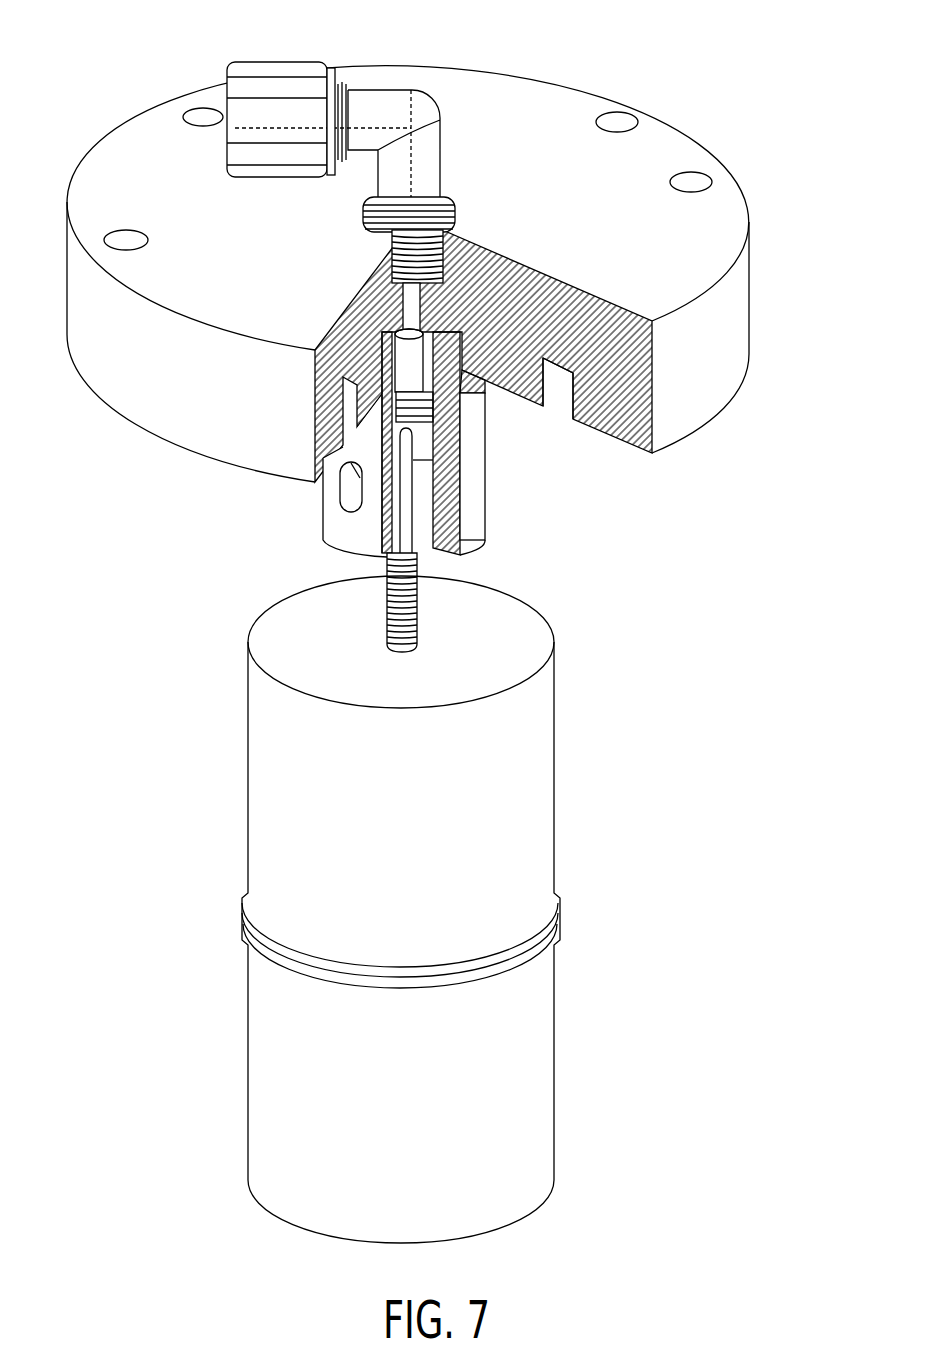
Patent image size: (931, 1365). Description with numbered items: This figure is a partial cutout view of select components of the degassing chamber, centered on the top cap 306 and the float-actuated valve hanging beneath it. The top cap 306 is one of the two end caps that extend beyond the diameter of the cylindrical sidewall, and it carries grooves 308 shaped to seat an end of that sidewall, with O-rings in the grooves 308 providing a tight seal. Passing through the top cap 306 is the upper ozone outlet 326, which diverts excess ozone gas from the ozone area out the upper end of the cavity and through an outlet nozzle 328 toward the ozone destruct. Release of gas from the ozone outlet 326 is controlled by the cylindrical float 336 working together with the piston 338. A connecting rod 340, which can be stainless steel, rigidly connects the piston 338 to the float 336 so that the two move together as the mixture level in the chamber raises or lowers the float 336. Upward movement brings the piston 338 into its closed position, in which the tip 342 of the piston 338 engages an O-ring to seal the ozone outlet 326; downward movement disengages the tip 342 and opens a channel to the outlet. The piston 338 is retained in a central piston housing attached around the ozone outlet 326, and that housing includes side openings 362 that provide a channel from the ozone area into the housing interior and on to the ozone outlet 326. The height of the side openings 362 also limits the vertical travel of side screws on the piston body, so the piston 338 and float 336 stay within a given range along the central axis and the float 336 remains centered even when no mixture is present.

The top cap 306 is at (733, 330).
The grooves 308 is at (564, 420).
The upper ozone outlet 326 is at (412, 302).
The outlet nozzle 328 is at (293, 93).
The cylindrical float 336 is at (540, 762).
The piston 338 is at (388, 462).
The connecting rod 340 is at (412, 592).
The tip 342 is at (417, 340).
The side openings 362 is at (332, 509).